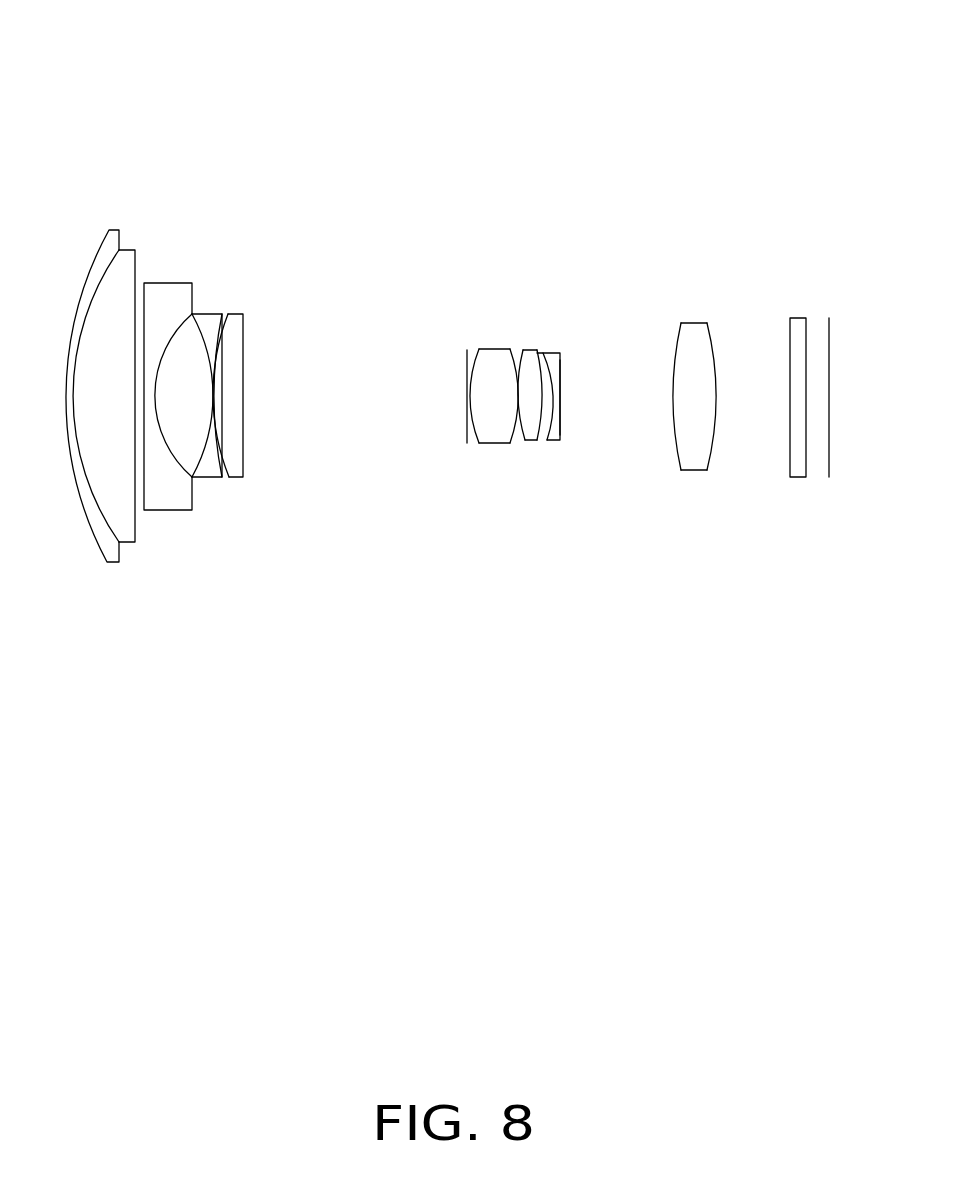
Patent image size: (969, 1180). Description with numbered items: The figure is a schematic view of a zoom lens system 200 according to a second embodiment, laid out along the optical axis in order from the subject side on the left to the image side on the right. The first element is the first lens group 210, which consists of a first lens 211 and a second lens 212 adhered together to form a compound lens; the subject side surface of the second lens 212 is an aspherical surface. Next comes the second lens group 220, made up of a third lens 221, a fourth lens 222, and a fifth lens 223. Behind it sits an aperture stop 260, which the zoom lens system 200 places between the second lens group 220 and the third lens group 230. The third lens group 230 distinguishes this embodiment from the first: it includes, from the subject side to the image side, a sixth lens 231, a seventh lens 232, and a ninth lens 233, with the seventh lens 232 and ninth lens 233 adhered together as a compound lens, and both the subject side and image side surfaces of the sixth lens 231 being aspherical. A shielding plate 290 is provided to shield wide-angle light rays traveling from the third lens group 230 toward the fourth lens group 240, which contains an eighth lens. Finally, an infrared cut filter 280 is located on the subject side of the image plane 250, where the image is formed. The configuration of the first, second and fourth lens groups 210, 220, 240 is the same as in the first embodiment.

The zoom lens system 200 is at (358, 72).
The first lens group 210 is at (165, 633).
The first lens 211 is at (100, 533).
The second lens 212 is at (123, 515).
The second lens group 220 is at (388, 562).
The third lens 221 is at (178, 498).
The fourth lens 222 is at (208, 472).
The fifth lens 223 is at (233, 453).
The third lens group 230 is at (645, 527).
The sixth lens 231 is at (497, 430).
The seventh lens 232 is at (532, 433).
The ninth lens 233 is at (550, 433).
The shielding plate 290 is at (563, 385).
The fourth lens group 240 is at (693, 457).
The aperture stop 260 is at (467, 427).
The infrared cut filter 280 is at (798, 352).
The image plane 250 is at (829, 348).